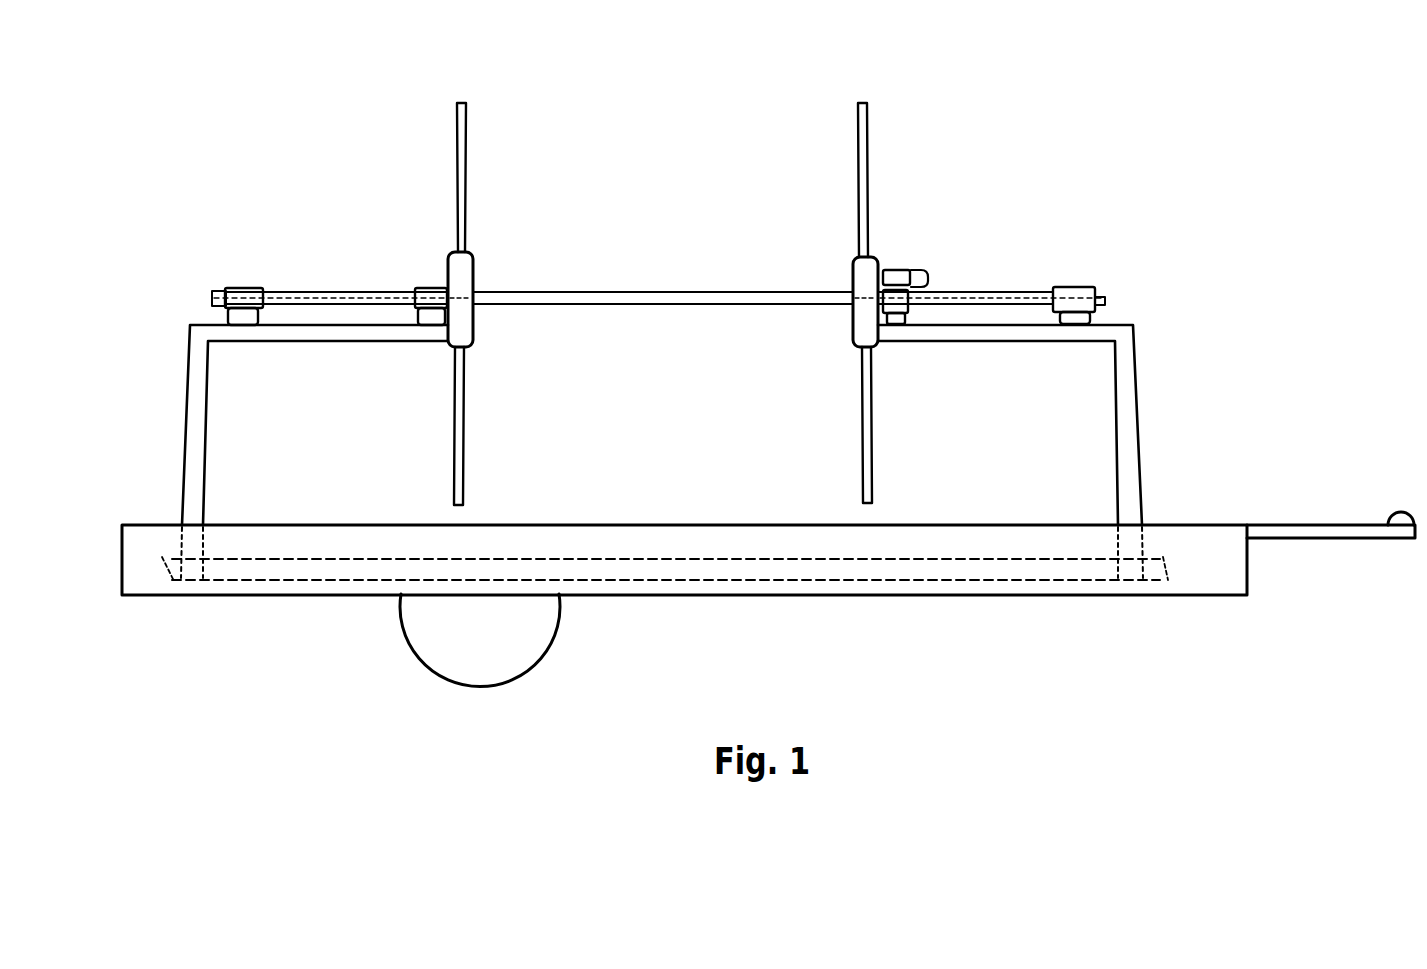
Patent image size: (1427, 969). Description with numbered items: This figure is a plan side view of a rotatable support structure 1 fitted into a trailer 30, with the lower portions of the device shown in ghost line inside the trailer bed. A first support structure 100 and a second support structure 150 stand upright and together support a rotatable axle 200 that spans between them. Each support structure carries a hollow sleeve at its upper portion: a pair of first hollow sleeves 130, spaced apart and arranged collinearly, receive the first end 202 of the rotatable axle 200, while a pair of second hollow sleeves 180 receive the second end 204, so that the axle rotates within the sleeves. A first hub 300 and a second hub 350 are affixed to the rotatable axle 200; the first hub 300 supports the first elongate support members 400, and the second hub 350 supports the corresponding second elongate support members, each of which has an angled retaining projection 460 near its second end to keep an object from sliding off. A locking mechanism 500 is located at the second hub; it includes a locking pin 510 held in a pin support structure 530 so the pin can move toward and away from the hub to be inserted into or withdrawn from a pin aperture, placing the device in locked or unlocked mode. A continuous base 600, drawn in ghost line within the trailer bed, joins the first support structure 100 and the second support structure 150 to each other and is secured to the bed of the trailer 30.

The rotatable support structure 1 is at (277, 153).
The trailer 30 is at (1206, 524).
The first support structure 100 is at (197, 409).
The first hollow sleeve 130 is at (254, 289).
The second support structure 150 is at (1130, 456).
The second hollow sleeve 180 is at (1079, 288).
The rotatable axle 200 is at (658, 240).
The first end of the rotatable axle 202 is at (323, 300).
The second end of the rotatable axle 204 is at (1000, 290).
The first hub 300 is at (474, 316).
The second hub 350 is at (850, 318).
The first elongate support member 400 is at (457, 151).
The retaining projection 460 is at (856, 150).
The locking mechanism 500 is at (943, 234).
The locking pin 510 is at (930, 270).
The pin support structure 530 is at (896, 268).
The base 600 is at (688, 570).